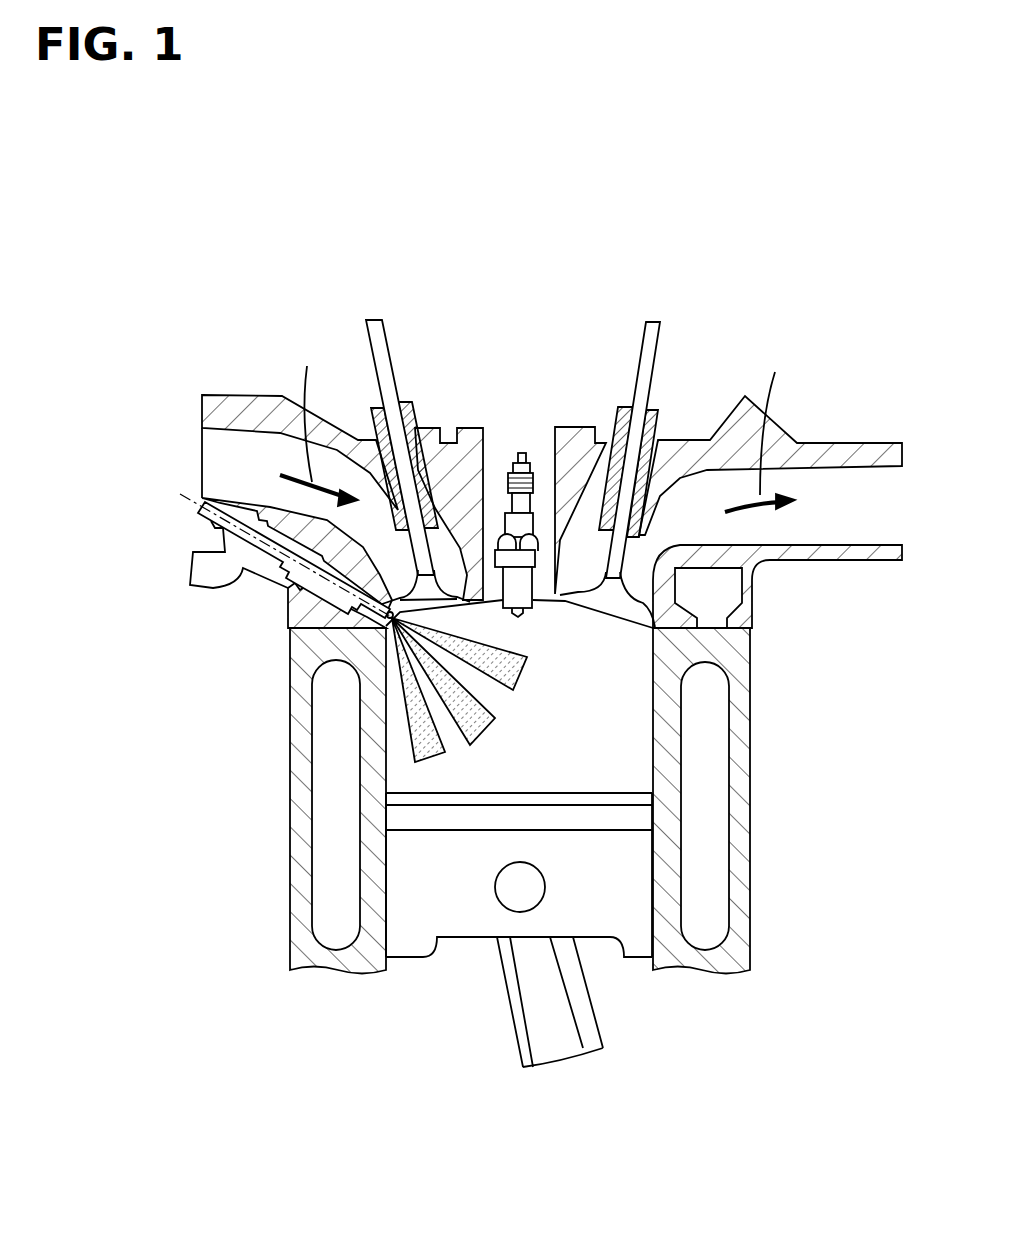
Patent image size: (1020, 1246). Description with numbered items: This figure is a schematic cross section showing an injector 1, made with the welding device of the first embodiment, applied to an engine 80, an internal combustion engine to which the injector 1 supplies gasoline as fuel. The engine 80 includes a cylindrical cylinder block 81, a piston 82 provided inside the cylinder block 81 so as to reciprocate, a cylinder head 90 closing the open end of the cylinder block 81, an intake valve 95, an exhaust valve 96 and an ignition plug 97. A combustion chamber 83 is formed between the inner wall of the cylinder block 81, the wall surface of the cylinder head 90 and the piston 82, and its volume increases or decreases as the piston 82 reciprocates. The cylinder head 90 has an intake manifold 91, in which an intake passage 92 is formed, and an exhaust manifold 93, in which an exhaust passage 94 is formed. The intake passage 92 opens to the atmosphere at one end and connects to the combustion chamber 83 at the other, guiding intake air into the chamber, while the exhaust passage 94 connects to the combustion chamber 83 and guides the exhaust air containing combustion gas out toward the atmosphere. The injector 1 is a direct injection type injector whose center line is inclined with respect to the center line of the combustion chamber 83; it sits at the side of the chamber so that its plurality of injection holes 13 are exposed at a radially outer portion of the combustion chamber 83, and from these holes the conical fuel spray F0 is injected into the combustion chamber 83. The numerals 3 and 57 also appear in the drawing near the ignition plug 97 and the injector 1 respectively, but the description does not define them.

The injector 1 is at (200, 505).
The spark plug gap 3 is at (520, 623).
The injection holes 13 is at (400, 620).
The injector holder 57 is at (200, 575).
The engine 80 is at (496, 833).
The cylinder block 81 is at (745, 668).
The piston 82 is at (640, 872).
The combustion chamber 83 is at (635, 738).
The cylinder head 90 is at (503, 522).
The intake manifold 91 is at (224, 402).
The intake passage 92 is at (256, 450).
The exhaust manifold 93 is at (835, 445).
The exhaust passage 94 is at (870, 495).
The intake valve 95 is at (372, 318).
The exhaust valve 96 is at (653, 320).
The ignition plug 97 is at (520, 453).
The fuel spray F0 is at (520, 675).